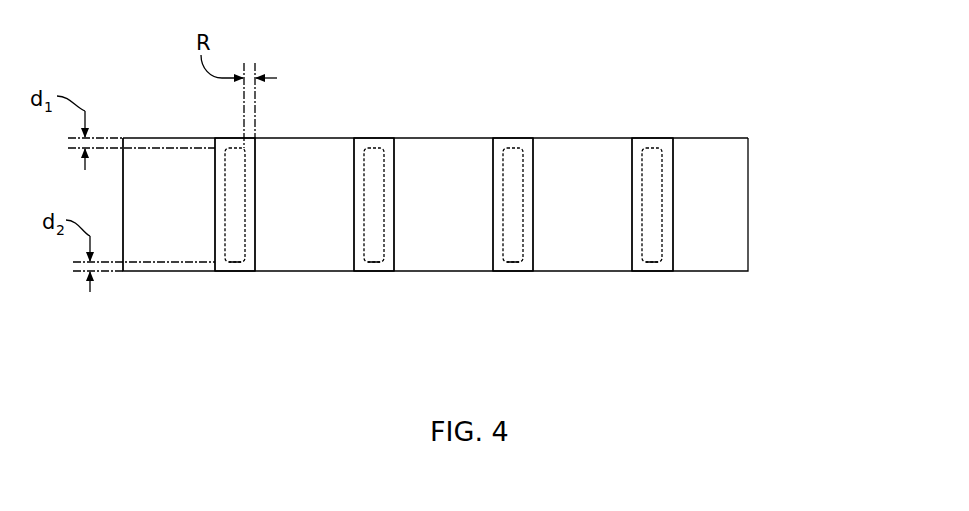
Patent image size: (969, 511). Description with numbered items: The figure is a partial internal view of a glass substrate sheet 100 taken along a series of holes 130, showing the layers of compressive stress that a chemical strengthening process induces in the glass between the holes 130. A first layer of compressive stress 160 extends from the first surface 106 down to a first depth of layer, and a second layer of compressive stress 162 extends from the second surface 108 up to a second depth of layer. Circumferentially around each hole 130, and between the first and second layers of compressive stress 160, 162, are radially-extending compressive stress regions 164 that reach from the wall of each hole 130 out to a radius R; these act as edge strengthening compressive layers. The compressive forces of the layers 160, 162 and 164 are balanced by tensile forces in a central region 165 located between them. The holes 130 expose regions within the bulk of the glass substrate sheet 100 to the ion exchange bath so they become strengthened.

The glass substrate sheet 100 is at (644, 67).
The first surface 106 is at (734, 138).
The second surface 108 is at (742, 272).
The hole 130 is at (162, 272).
The first layer of compressive stress 160 is at (233, 146).
The second layer of compressive stress 162 is at (235, 263).
The radially-extending compressive stress region 164 is at (219, 182).
The central region 165 is at (236, 234).